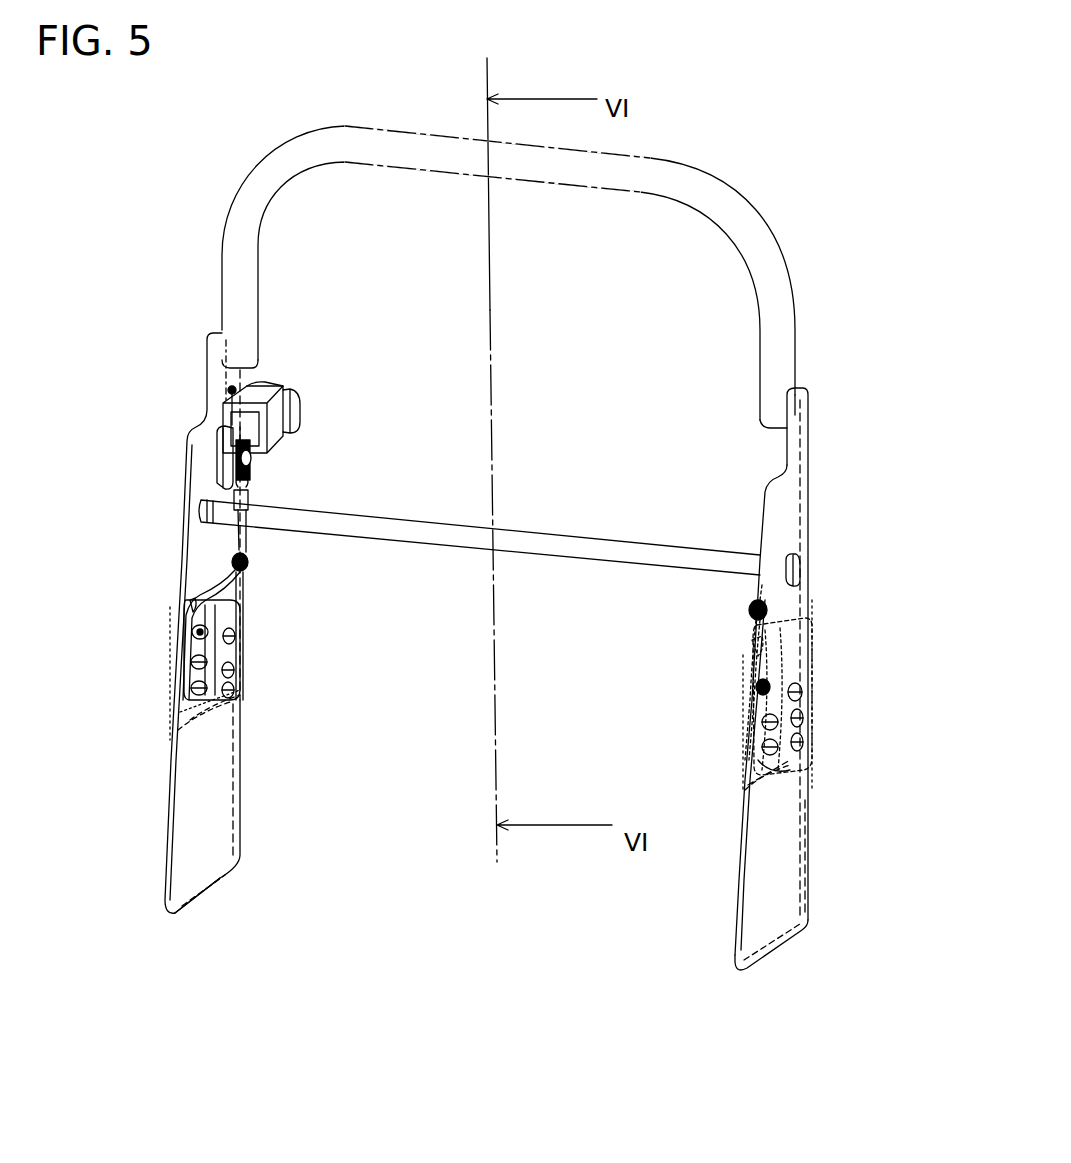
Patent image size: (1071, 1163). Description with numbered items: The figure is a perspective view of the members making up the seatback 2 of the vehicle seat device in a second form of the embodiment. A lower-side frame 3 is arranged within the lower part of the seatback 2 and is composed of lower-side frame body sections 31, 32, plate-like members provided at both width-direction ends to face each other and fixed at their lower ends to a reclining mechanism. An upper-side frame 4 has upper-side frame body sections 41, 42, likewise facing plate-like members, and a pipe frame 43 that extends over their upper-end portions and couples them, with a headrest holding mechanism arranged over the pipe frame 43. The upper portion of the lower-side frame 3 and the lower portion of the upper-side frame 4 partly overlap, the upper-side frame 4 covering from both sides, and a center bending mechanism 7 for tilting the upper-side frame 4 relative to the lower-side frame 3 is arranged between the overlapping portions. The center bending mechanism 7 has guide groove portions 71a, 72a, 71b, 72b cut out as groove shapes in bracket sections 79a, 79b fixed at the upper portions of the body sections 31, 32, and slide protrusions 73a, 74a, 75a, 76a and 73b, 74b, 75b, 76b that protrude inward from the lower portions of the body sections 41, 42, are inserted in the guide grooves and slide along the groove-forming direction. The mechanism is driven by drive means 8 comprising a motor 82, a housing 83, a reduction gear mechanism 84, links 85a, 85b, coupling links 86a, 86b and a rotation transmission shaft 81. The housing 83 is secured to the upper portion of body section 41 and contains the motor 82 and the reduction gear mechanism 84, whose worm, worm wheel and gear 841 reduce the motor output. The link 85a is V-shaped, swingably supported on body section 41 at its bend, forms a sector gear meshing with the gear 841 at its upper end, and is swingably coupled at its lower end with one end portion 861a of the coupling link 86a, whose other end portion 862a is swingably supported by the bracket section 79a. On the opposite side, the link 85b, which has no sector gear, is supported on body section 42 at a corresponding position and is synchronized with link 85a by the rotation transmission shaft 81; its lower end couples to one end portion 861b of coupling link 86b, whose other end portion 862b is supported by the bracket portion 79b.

The seatback 2 is at (752, 148).
The lower-side frame 3 is at (309, 809).
The lower-side frame body section 31 is at (200, 827).
The lower-side frame body section 32 is at (765, 900).
The upper-side frame 4 is at (720, 413).
The upper-side frame body section 41 is at (200, 463).
The upper-side frame body section 42 is at (790, 515).
The pipe frame 43 is at (765, 275).
The center bending mechanism 7 is at (289, 739).
The guide groove portion 71a is at (240, 663).
The guide groove portion 72a is at (185, 642).
The slide protrusion 73a is at (238, 640).
The slide protrusion 74a is at (240, 694).
The slide protrusion 75a is at (188, 657).
The slide protrusion 76a is at (180, 690).
The bracket section 79a is at (178, 724).
The guide groove portion 71b is at (808, 712).
The guide groove portion 72b is at (752, 678).
The slide protrusion 73b is at (808, 691).
The slide protrusion 74b is at (808, 742).
The slide protrusion 75b is at (756, 710).
The slide protrusion 76b is at (755, 741).
The bracket section 79b is at (740, 779).
The drive means 8 is at (309, 284).
The rotation transmission shaft 81 is at (538, 542).
The motor 82 is at (262, 386).
The housing 83 is at (275, 420).
The reduction gear mechanism 84 is at (206, 418).
The gear 841 is at (258, 473).
The link 85a is at (245, 503).
The link 85b is at (810, 577).
The coupling link 86a is at (238, 625).
The coupling link 86b is at (748, 618).
The one end portion of coupling link 861a is at (248, 563).
The one end portion of coupling link 861b is at (770, 610).
The other end portion of coupling link 862a is at (192, 603).
The other end portion of coupling link 862b is at (745, 655).